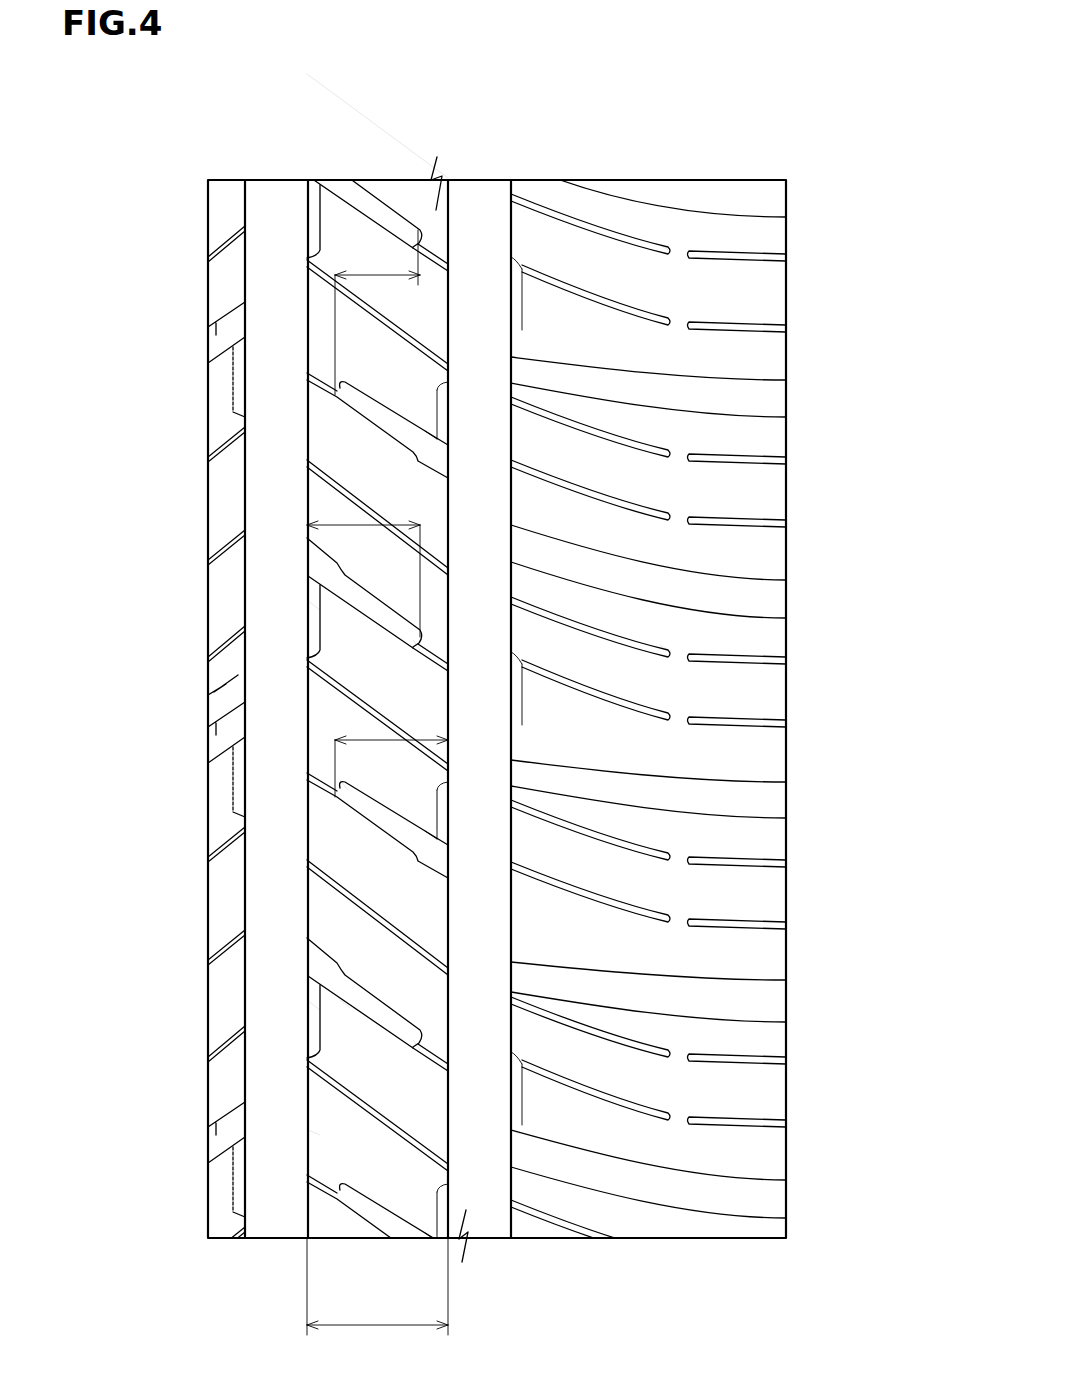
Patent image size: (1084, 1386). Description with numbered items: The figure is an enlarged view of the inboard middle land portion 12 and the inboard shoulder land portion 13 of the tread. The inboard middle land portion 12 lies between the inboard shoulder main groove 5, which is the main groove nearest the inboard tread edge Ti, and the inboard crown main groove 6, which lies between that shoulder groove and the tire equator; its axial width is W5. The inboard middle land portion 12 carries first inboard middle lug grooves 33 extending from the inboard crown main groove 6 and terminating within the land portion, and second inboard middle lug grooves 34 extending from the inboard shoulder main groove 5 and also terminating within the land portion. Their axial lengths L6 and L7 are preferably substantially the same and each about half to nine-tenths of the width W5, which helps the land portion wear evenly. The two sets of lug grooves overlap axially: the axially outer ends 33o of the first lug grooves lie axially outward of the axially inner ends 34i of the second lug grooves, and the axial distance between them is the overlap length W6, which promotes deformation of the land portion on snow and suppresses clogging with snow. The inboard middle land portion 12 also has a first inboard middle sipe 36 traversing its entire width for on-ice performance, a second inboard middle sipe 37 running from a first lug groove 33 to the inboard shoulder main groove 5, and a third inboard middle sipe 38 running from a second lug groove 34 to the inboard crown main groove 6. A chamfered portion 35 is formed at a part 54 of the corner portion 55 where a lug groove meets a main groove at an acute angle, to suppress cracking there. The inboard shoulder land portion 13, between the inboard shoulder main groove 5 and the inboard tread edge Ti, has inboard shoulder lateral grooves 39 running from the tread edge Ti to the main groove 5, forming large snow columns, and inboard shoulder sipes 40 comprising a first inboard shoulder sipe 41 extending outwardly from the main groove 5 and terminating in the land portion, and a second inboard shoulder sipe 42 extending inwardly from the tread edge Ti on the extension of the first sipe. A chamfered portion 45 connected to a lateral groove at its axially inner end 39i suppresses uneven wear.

The inboard shoulder main groove 5 is at (483, 214).
The inboard crown main groove 6 is at (278, 214).
The inboard middle land portion 12 is at (493, 725).
The inboard shoulder land portion 13 is at (700, 712).
The first inboard middle lug groove 33 is at (341, 203).
The axially outer end of first inboard middle lug groove 33o is at (511, 232).
The second inboard middle lug groove 34 is at (392, 438).
The axially inner end of second inboard middle lug groove 34i is at (335, 397).
The chamfered portion 35 is at (298, 595).
The first inboard middle sipe 36 is at (357, 907).
The second inboard middle sipe 37 is at (413, 647).
The third inboard middle sipe 38 is at (337, 750).
The inboard shoulder lateral groove 39 is at (715, 401).
The axially inner end of inboard shoulder lateral groove 39i is at (511, 1140).
The inboard shoulder sipe 40 is at (597, 498).
The first inboard shoulder sipe 41 is at (633, 1117).
The second inboard shoulder sipe 42 is at (730, 718).
The chamfered portion 45 is at (511, 723).
The part of the corner portion 54 is at (327, 1017).
The corner portion 55 is at (305, 1130).
The inboard tread edge Ti is at (786, 230).
The axial width of inboard middle land portion W5 is at (377, 1286).
The overlap length W6 is at (380, 268).
The axial length of first inboard middle lug groove L6 is at (305, 523).
The axial length of second inboard middle lug groove L7 is at (335, 740).